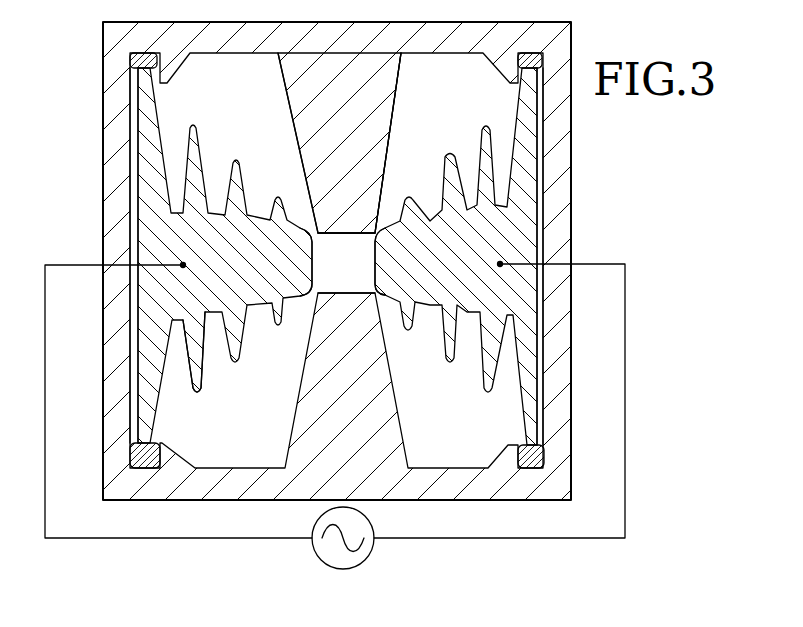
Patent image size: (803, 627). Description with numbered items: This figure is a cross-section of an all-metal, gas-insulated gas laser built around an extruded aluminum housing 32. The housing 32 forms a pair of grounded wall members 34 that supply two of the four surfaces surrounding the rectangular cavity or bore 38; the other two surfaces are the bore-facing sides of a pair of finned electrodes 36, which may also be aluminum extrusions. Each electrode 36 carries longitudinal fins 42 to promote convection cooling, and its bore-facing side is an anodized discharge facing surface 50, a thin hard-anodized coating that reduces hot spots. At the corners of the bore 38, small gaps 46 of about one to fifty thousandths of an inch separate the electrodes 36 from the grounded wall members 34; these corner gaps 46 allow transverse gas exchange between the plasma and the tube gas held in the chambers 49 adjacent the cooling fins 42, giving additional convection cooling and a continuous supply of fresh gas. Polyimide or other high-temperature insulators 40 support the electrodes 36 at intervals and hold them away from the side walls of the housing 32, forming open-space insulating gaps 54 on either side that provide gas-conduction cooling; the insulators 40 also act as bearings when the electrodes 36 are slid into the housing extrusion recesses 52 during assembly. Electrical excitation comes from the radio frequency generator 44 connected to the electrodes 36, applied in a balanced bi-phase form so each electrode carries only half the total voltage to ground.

The aluminum housing 32 is at (117, 125).
The grounded wall members 34 is at (392, 131).
The finned electrodes 36 is at (163, 211).
The rectangular cavity or bore 38 is at (352, 292).
The high-temperature insulators 40 is at (545, 463).
The longitudinal fins 42 is at (202, 390).
The radio frequency generator 44 is at (323, 559).
The gaps 46 is at (383, 215).
The chambers 49 is at (266, 142).
The anodized discharge facing surfaces 50 is at (375, 255).
The housing extrusion recesses 52 is at (522, 90).
The insulating gaps 54 is at (132, 215).